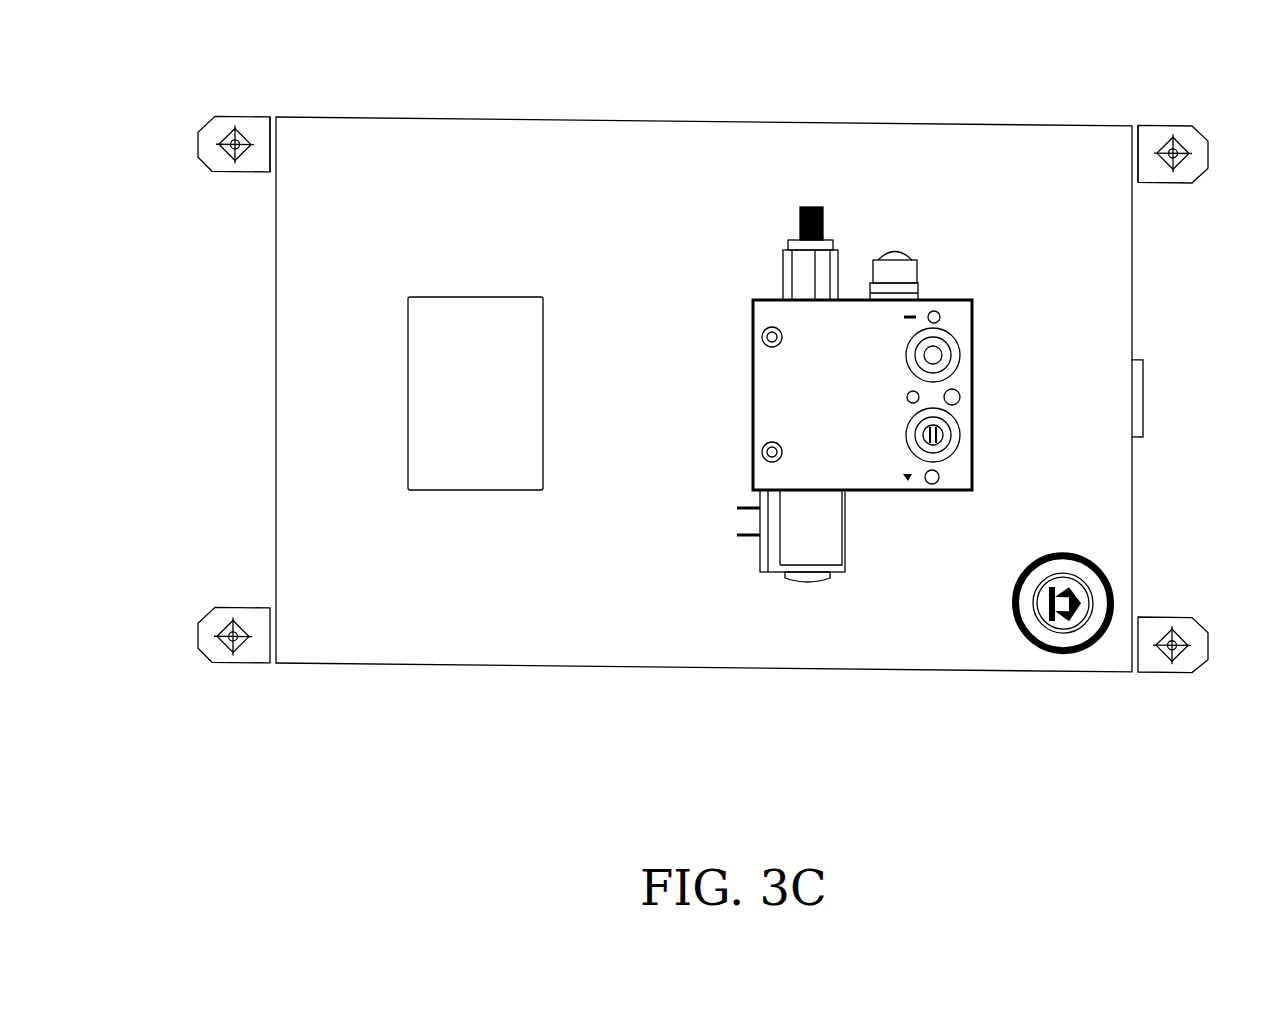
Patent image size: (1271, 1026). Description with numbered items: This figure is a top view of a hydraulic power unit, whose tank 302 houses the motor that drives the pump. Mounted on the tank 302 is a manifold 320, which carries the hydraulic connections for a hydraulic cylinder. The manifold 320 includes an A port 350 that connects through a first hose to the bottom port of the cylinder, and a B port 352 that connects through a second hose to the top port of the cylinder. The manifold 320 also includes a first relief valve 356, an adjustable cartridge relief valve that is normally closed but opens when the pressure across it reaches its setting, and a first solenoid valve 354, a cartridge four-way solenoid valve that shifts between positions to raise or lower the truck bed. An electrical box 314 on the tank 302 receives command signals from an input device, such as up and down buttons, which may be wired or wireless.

The tank 302 is at (312, 679).
The electrical box 314 is at (445, 268).
The manifold 320 is at (740, 352).
The A port 350 is at (945, 352).
The B port 352 is at (948, 432).
The first solenoid valve 354 is at (810, 580).
The first relief valve 356 is at (902, 270).